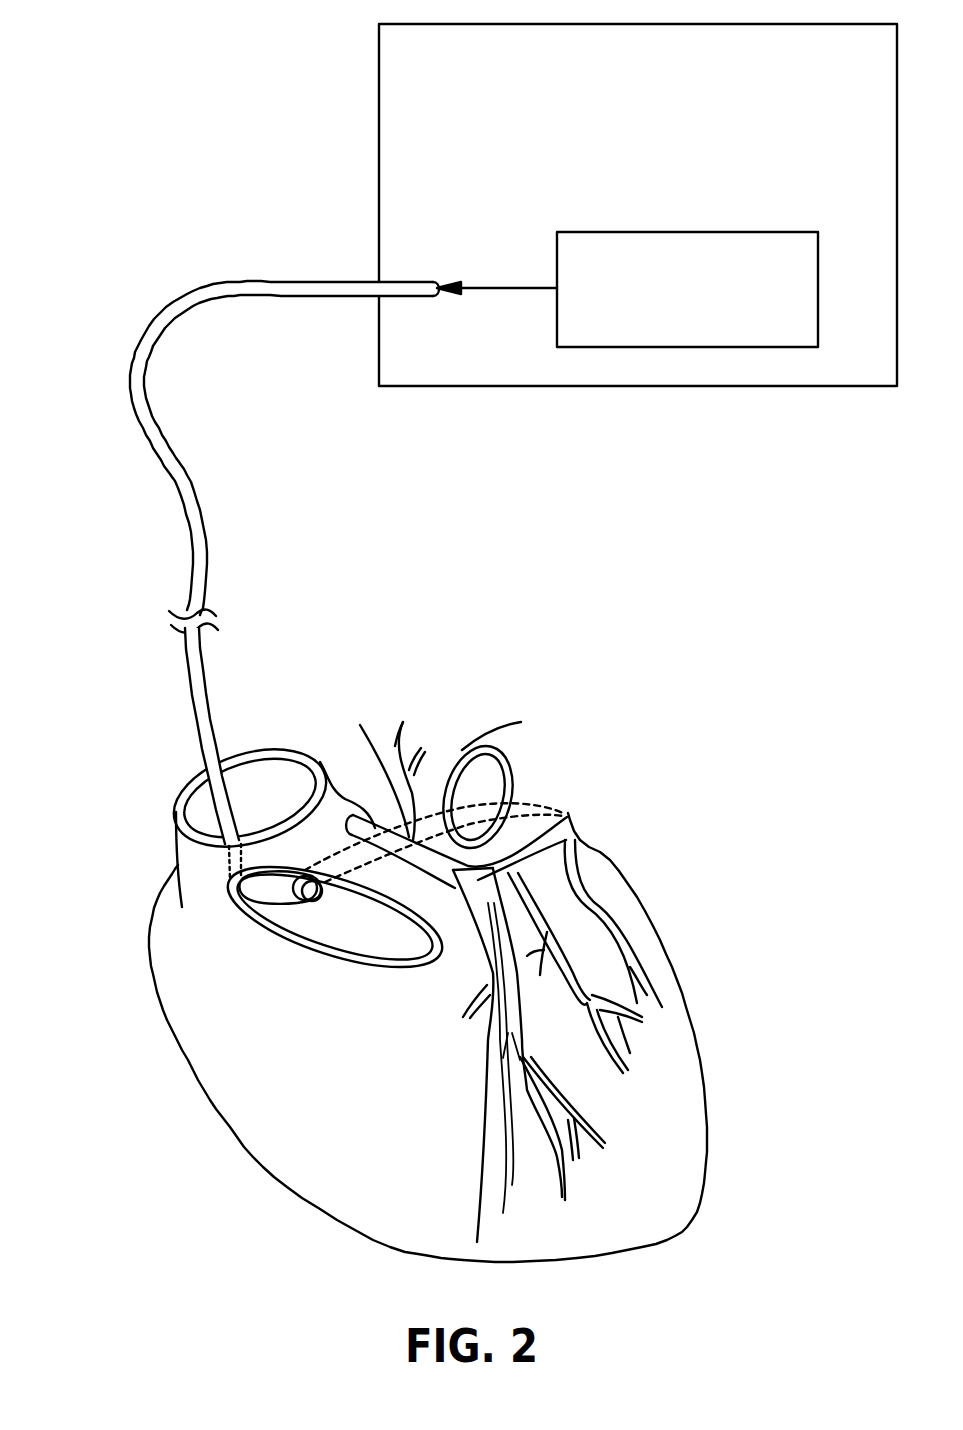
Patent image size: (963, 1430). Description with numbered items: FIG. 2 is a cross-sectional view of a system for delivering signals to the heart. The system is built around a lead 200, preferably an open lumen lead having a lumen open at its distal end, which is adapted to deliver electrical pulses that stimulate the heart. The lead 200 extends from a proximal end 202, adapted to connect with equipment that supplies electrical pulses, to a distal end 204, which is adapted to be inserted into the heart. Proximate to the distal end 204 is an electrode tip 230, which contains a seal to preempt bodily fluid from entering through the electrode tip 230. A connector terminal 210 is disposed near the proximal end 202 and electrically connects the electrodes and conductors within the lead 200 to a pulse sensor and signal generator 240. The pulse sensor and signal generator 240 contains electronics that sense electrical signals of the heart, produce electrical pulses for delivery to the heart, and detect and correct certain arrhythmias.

The lead 200 is at (260, 905).
The proximal end 202 is at (320, 276).
The distal end 204 is at (500, 1018).
The connector terminal 210 is at (434, 295).
The electrode tip 230 is at (515, 1020).
The pulse sensor and signal generator 240 is at (821, 291).